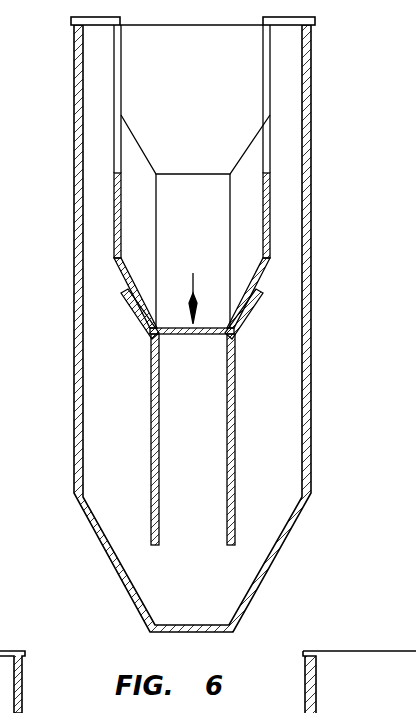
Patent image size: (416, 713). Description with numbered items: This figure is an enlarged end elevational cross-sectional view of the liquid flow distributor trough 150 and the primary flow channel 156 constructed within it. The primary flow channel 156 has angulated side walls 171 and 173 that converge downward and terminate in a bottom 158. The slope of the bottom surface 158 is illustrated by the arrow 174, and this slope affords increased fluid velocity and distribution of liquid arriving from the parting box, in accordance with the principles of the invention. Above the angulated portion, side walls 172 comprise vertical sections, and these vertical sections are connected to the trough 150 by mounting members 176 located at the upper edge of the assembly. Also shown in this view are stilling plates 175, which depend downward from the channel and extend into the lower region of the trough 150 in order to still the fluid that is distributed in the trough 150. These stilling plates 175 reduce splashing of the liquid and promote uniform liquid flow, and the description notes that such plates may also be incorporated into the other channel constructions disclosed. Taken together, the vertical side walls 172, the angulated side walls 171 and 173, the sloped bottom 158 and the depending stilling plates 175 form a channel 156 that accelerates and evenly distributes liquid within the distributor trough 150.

The distributor trough 150 is at (311, 377).
The primary flow channel 156 is at (270, 160).
The bottom 158 is at (180, 334).
The angulated side wall 171 is at (137, 242).
The side walls 172 is at (121, 58).
The angulated side wall 173 is at (253, 218).
The arrow 174 is at (192, 323).
The stilling plates 175 is at (151, 484).
The mounting members 176 is at (98, 25).